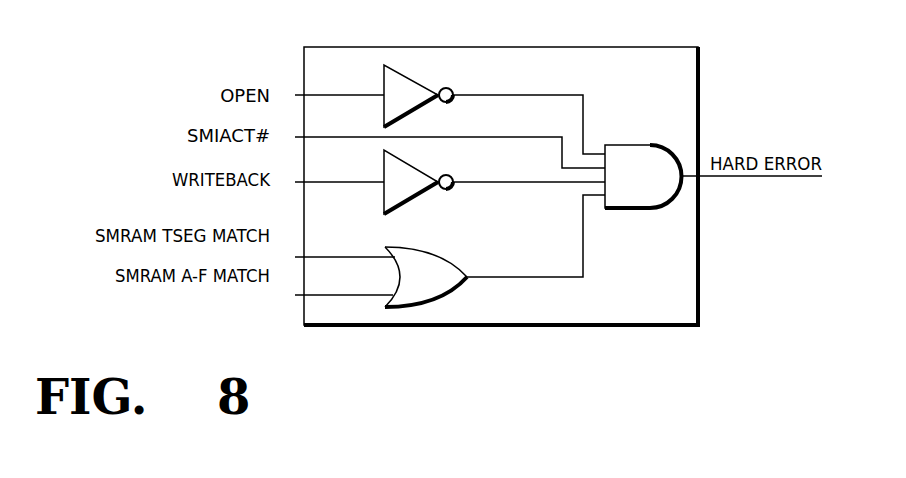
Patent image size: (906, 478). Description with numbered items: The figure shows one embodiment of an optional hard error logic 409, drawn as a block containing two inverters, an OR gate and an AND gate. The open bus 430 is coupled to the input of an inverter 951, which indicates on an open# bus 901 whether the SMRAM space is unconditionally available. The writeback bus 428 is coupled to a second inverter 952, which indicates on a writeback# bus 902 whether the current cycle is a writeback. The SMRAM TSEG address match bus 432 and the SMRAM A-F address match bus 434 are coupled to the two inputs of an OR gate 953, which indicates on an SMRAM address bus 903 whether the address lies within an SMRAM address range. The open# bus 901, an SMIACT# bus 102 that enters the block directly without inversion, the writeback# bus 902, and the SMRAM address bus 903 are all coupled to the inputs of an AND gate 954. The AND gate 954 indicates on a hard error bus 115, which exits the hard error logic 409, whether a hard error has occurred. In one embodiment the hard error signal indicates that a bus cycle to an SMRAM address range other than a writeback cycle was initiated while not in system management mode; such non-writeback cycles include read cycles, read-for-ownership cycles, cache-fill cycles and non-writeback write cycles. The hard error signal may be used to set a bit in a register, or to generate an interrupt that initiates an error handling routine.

The hard error logic 409 is at (688, 318).
The open bus 430 is at (318, 90).
The SMIACT# signal 102 is at (318, 132).
The writeback bus 428 is at (318, 176).
The SMRAM TSEG address match bus 432 is at (318, 253).
The SMRAM A-F address match bus 434 is at (318, 291).
The inverter 951 is at (413, 103).
The inverter 952 is at (413, 190).
The OR gate 953 is at (439, 285).
The AND gate 954 is at (647, 184).
The open# bus 901 is at (487, 93).
The writeback# bus 902 is at (487, 180).
The SMRAM address bus 903 is at (488, 276).
The hard error bus 115 is at (728, 178).